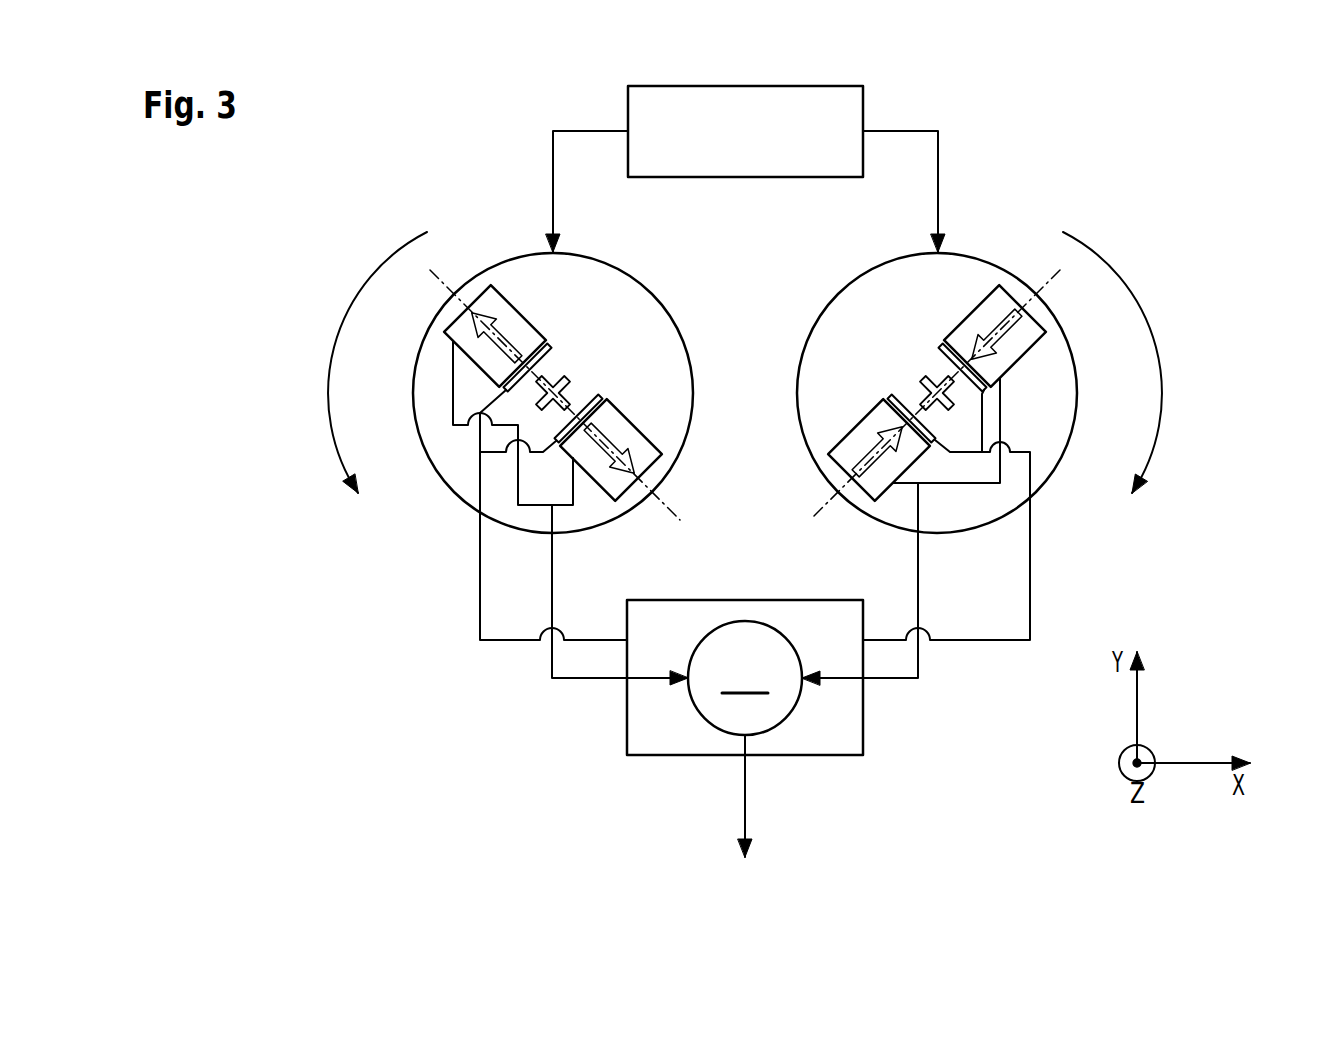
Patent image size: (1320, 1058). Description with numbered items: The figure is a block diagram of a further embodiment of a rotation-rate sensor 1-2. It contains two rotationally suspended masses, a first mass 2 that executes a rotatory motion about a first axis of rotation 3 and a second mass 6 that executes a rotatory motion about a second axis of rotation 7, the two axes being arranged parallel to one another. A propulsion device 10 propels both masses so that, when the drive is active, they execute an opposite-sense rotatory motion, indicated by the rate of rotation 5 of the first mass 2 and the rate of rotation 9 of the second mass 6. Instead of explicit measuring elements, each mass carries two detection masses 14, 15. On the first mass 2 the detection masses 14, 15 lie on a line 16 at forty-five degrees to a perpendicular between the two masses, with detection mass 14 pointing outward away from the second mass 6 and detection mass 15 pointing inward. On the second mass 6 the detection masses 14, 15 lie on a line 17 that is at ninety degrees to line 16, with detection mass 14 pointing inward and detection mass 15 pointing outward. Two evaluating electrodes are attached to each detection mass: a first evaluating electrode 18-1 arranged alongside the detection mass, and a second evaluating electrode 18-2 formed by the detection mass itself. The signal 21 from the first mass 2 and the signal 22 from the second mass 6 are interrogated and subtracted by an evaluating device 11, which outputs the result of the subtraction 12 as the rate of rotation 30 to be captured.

The rotation-rate sensor 1-2 is at (1191, 180).
The first mass 2 is at (430, 465).
The first axis of rotation 3 is at (565, 382).
The rate of rotation 5 is at (328, 393).
The second mass 6 is at (1062, 470).
The second axis of rotation 7 is at (920, 384).
The rate of rotation 9 is at (1163, 393).
The propulsion device 10 is at (745, 177).
The evaluating device 11 is at (627, 733).
The result of the subtraction 12 is at (800, 705).
The detection mass 14 is at (525, 318).
The detection mass 15 is at (650, 442).
The line 16 is at (655, 493).
The line 17 is at (815, 510).
The first evaluating electrode 18-1 is at (557, 338).
The second evaluating electrode 18-2 is at (852, 427).
The signal 21 is at (552, 660).
The signal 22 is at (918, 664).
The rate of rotation to be captured 30 is at (745, 797).